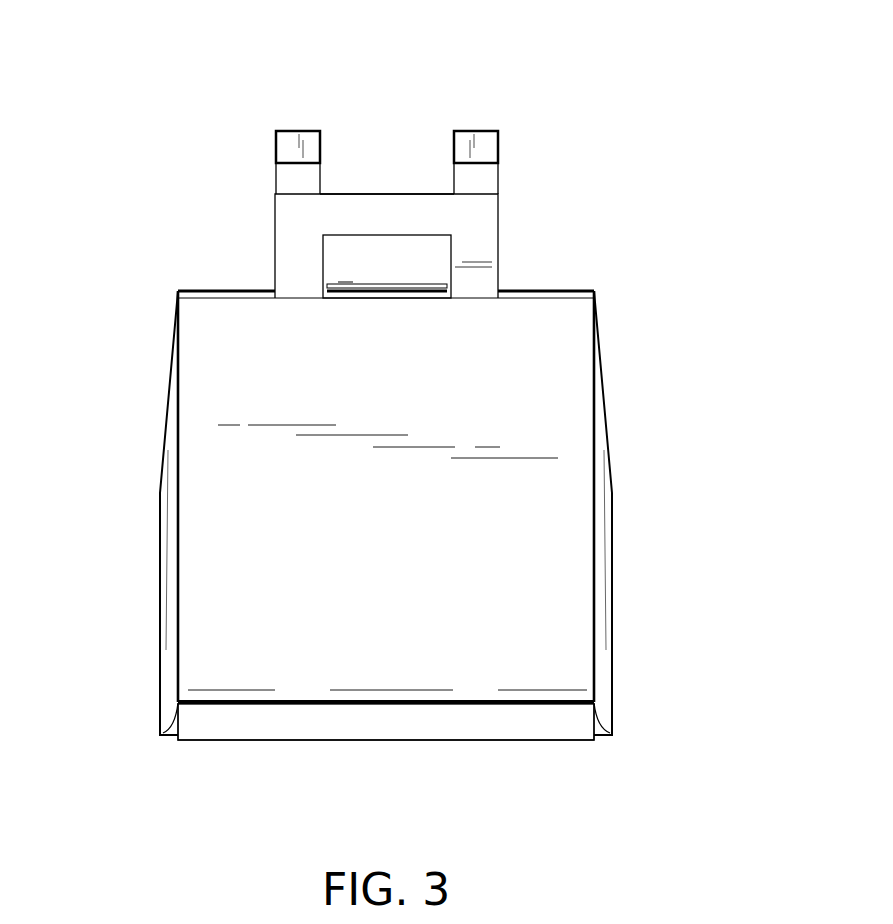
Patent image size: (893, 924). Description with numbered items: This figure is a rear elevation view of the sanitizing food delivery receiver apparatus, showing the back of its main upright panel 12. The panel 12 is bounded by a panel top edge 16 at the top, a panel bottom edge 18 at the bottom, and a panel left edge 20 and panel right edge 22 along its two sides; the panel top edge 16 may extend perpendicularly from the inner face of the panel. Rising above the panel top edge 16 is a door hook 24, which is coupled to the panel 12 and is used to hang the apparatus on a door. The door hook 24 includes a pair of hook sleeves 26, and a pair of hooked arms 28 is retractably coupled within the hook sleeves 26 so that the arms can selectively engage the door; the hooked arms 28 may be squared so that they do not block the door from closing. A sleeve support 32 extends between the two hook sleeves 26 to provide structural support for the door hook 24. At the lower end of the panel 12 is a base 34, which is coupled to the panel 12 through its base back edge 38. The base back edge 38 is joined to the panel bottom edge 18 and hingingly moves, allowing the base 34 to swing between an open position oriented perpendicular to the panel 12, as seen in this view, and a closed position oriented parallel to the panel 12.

The panel 12 is at (553, 385).
The panel top edge 16 is at (547, 290).
The panel bottom edge 18 is at (533, 704).
The panel left edge 20 is at (597, 498).
The panel right edge 22 is at (177, 497).
The door hook 24 is at (498, 247).
The pair of hook sleeves 26 is at (467, 248).
The pair of hooked arms 28 is at (470, 130).
The sleeve support 32 is at (375, 207).
The base 34 is at (192, 743).
The base back edge 38 is at (322, 723).